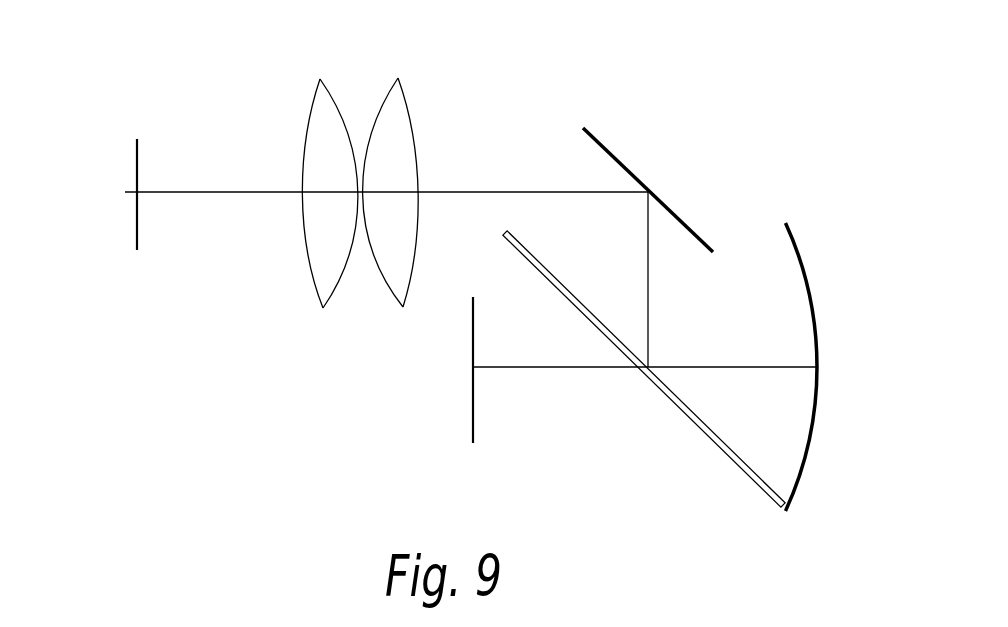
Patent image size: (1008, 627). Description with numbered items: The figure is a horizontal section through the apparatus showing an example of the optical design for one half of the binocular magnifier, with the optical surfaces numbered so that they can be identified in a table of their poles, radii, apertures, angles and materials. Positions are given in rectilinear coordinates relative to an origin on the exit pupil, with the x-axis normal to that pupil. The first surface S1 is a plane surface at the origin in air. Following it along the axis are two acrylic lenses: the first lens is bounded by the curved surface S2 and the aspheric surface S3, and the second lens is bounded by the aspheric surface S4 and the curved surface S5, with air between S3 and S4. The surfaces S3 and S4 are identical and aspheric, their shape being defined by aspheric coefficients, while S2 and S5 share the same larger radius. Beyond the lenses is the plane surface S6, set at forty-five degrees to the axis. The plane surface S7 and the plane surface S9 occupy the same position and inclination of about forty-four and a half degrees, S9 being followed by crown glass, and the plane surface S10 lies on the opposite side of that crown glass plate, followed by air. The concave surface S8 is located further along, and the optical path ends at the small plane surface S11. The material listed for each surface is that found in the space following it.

The surface S1 is at (135, 158).
The surface S2 is at (305, 117).
The surface S3 is at (339, 288).
The surface S4 is at (382, 94).
The surface S5 is at (413, 120).
The surface S6 is at (597, 143).
The surface S7 is at (577, 250).
The surface S8 is at (803, 288).
The surface S9 is at (644, 369).
The surface S10 is at (681, 408).
The surface S11 is at (470, 415).